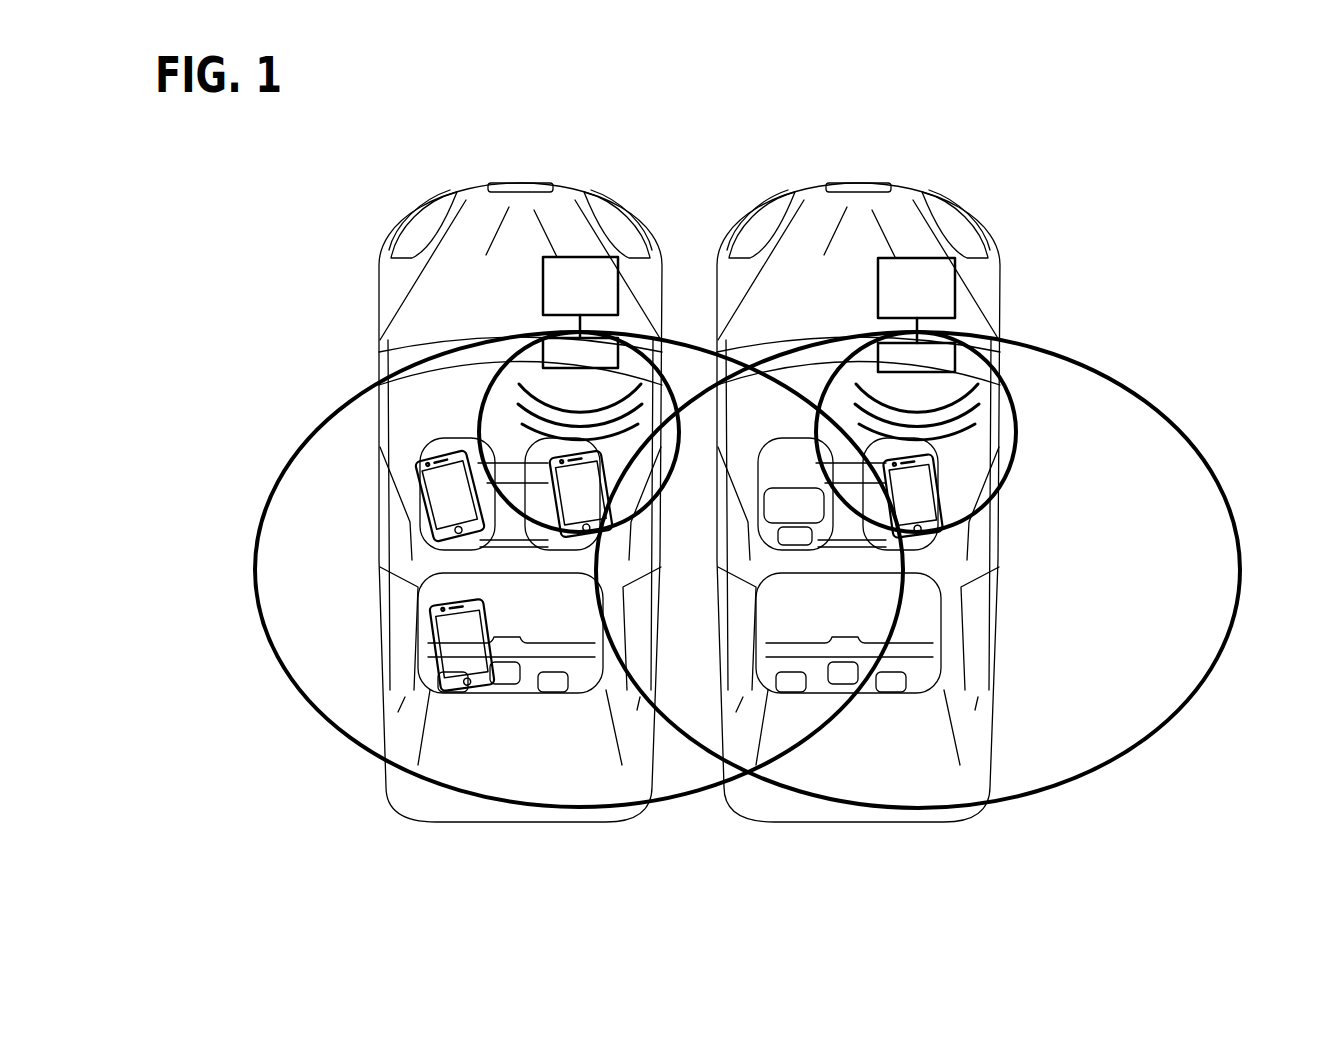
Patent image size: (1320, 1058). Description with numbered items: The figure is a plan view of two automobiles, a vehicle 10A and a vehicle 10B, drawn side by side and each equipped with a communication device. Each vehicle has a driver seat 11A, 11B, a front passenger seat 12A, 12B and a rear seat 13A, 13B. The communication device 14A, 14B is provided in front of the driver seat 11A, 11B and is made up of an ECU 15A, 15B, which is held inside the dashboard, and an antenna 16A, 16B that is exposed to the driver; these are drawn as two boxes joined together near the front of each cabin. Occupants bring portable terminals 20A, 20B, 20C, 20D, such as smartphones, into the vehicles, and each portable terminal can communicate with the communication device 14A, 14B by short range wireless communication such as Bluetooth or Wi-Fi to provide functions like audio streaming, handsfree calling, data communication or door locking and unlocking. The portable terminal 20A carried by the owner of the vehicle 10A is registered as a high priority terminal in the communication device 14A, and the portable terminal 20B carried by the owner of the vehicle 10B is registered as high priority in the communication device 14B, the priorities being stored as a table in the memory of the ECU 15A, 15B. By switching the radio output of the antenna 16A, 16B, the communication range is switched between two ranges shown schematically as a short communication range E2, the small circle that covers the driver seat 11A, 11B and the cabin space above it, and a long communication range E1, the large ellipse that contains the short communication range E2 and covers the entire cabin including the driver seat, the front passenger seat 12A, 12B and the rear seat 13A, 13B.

The vehicle 10A is at (596, 189).
The vehicle 10B is at (930, 189).
The driver seat 11A is at (547, 457).
The driver seat 11B is at (925, 428).
The front passenger seat 12A is at (453, 440).
The front passenger seat 12B is at (775, 453).
The rear seat 13A is at (555, 612).
The rear seat 13B is at (840, 613).
The communication device 14A is at (690, 143).
The communication device 14B is at (1085, 195).
The ECU 15A is at (595, 277).
The ECU 15B is at (925, 280).
The antenna 16A is at (562, 355).
The antenna 16B is at (935, 352).
The portable terminal 20A is at (580, 507).
The portable terminal 20B is at (925, 495).
The portable terminal 20C is at (443, 493).
The portable terminal 20D is at (455, 644).
The long communication range E1 is at (346, 736).
The short communication range E2 is at (488, 390).